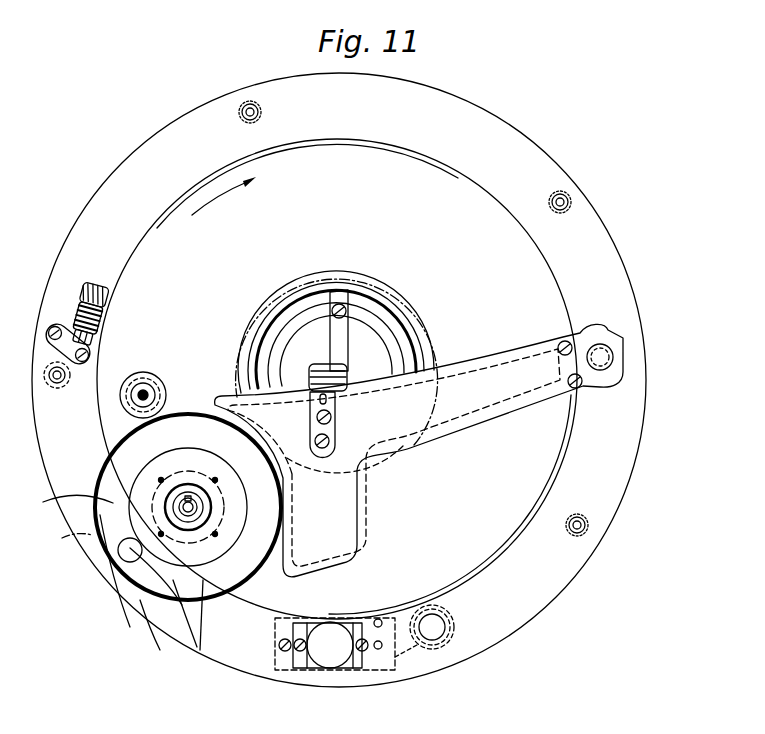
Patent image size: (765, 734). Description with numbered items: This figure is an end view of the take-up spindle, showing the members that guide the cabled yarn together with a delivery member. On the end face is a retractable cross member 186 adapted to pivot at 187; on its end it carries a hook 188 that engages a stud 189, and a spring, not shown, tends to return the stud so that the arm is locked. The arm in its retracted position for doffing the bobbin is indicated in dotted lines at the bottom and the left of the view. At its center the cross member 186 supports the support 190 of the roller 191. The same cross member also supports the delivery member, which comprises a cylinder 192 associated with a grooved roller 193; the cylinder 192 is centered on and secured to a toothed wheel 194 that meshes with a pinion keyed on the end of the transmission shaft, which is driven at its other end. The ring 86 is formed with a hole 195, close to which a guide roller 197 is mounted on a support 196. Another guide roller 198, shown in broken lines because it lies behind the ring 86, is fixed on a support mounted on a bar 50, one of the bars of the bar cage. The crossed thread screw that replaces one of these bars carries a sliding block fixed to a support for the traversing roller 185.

The bar 50 is at (244, 105).
The ring 86 is at (537, 590).
The traversing roller 185 is at (447, 630).
The retractable cross member 186 is at (477, 407).
The pivot 187 is at (118, 563).
The hook 188 is at (600, 333).
The stud 189 is at (565, 346).
The support 190 is at (323, 432).
The roller 191 is at (312, 378).
The cylinder 192 is at (195, 537).
The grooved roller 193 is at (165, 388).
The toothed wheel 194 is at (223, 547).
The hole 195 is at (72, 300).
The support 196 is at (96, 338).
The guide roller 197 is at (92, 321).
The guide roller 198 is at (103, 295).